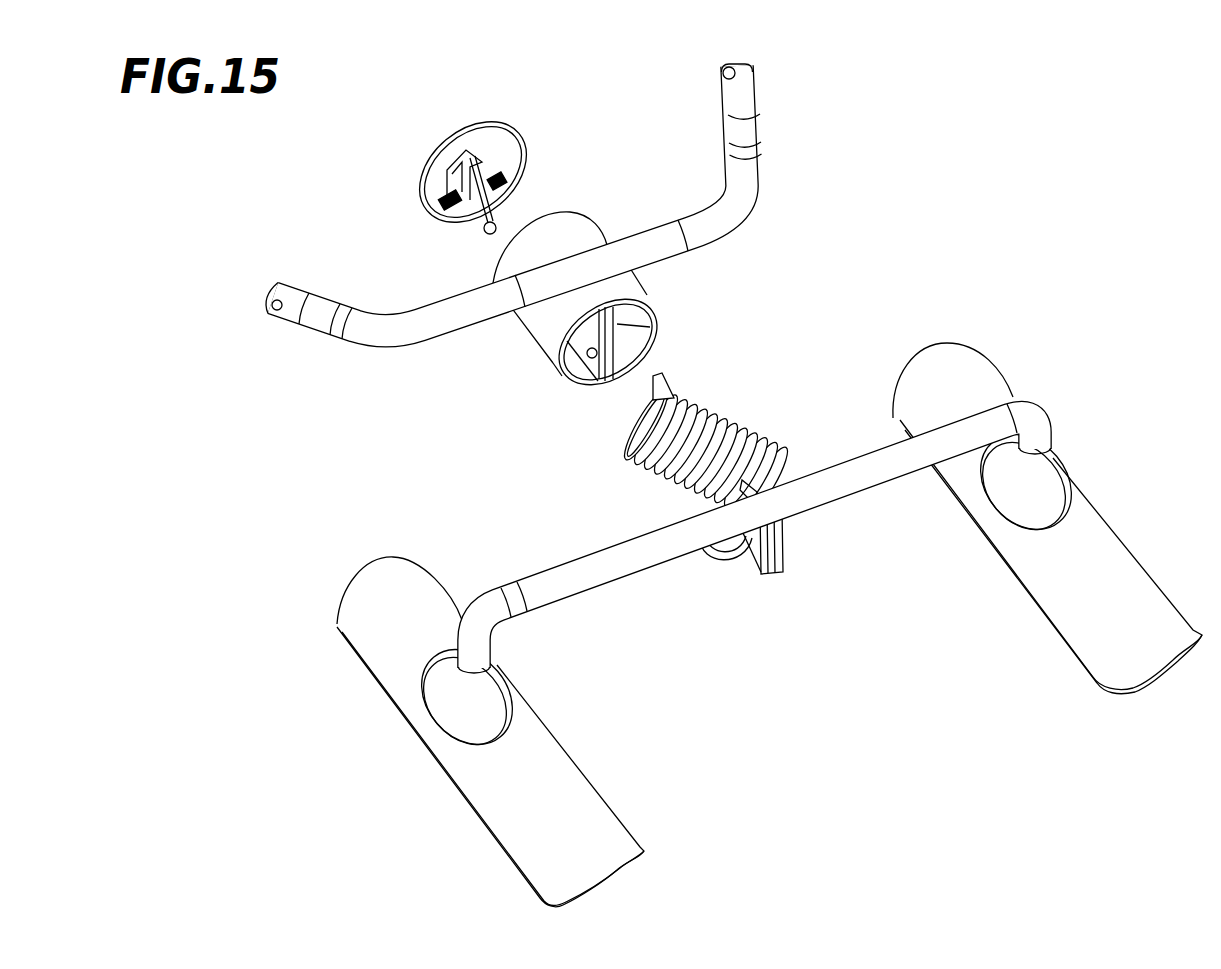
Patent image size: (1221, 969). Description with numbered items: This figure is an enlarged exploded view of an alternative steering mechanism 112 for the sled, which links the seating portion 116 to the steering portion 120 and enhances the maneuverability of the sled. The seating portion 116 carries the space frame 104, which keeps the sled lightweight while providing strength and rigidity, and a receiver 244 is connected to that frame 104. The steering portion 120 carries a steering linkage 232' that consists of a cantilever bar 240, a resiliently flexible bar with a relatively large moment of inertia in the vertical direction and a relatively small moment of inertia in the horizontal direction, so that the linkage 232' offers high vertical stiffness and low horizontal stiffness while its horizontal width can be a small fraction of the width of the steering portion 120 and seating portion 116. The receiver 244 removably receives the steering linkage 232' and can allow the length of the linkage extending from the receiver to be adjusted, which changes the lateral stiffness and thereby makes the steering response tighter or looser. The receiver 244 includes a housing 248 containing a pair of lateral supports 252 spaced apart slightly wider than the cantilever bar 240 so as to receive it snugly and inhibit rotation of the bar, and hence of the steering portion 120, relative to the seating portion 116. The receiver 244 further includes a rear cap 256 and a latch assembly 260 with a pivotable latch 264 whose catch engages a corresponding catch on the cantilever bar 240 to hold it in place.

The space frame 104 is at (573, 270).
The steering mechanism 112 is at (630, 253).
The seating portion 116 is at (322, 349).
The steering portion 120 is at (769, 605).
The steering linkage 232' is at (705, 439).
The cantilever bar 240 is at (660, 387).
The receiver 244 is at (608, 216).
The housing 248 is at (510, 263).
The lateral supports 252 is at (661, 357).
The rear cap 256 is at (430, 137).
The latch assembly 260 is at (408, 219).
The pivotable latch 264 is at (537, 213).